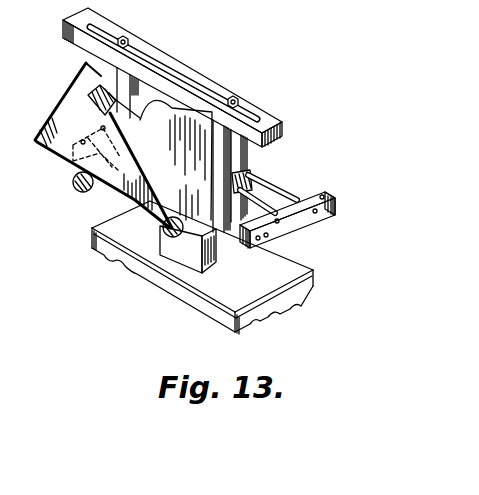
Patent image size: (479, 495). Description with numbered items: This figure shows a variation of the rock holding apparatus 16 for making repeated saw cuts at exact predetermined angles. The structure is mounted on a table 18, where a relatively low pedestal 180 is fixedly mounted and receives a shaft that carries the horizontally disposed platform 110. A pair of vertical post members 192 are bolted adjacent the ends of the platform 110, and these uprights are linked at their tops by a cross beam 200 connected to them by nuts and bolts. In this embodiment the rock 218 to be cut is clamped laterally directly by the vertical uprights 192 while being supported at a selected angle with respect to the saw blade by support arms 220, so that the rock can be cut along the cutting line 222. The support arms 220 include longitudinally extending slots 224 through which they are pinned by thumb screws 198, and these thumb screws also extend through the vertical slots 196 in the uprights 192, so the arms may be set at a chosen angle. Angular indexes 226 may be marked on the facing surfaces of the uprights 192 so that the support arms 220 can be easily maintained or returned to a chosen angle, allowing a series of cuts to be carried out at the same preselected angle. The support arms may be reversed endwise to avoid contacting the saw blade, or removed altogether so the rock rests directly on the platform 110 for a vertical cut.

The clamping fixture 16 is at (80, 243).
The table 18 is at (312, 277).
The platform 110 is at (315, 221).
The low pedestal 180 is at (188, 252).
The vertical post members 192 is at (136, 105).
The longitudinally extending slots 196 is at (232, 162).
The thumb screws 198 is at (250, 187).
The cross beam 200 is at (194, 72).
The rock 218 is at (52, 108).
The support arms 220 is at (80, 188).
The cutting line 222 is at (78, 96).
The longitudinally extending slots 224 is at (202, 128).
The angular indexes 226 is at (160, 58).